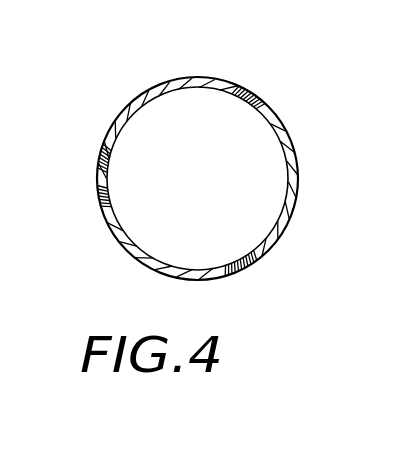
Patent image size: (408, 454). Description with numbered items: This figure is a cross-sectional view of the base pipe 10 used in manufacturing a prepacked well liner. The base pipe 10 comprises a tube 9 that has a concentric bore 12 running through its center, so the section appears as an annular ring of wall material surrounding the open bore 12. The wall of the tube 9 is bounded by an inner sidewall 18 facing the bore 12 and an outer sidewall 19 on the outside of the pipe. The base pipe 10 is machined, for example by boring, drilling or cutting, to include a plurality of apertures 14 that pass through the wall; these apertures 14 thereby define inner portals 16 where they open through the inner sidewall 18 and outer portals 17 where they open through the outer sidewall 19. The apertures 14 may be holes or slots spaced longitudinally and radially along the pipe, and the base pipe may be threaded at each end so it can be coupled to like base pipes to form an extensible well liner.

The base pipe 10 is at (210, 76).
The concentric bore 12 is at (215, 160).
The apertures 14 is at (251, 96).
The tube 9 is at (298, 168).
The inner portals 16 is at (104, 187).
The outer portals 17 is at (100, 194).
The inner sidewall 18 is at (148, 258).
The outer sidewall 19 is at (133, 263).